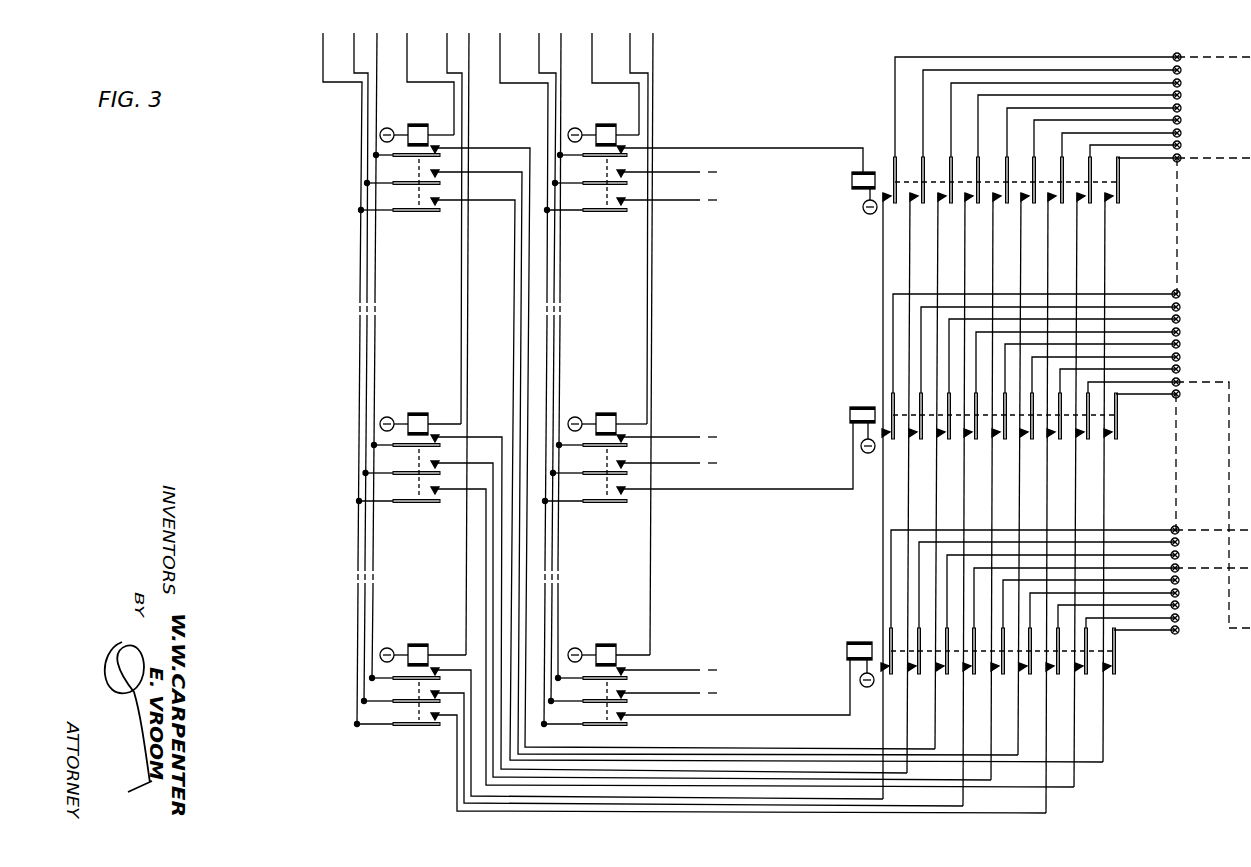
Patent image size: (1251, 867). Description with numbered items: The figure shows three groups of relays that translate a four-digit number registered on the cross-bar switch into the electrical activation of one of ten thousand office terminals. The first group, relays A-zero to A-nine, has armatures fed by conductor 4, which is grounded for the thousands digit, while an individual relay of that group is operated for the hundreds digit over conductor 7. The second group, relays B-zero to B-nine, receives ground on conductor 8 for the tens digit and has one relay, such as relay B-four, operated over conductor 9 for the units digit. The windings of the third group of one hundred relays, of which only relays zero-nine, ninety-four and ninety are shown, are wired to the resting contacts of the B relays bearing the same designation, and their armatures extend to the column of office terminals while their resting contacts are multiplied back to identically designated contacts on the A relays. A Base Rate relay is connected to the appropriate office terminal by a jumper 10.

The conductor 4 is at (323, 62).
The conductor 7 is at (461, 341).
The conductor 8 is at (509, 84).
The conductor 9 is at (647, 341).
The jumper 10 is at (1229, 468).